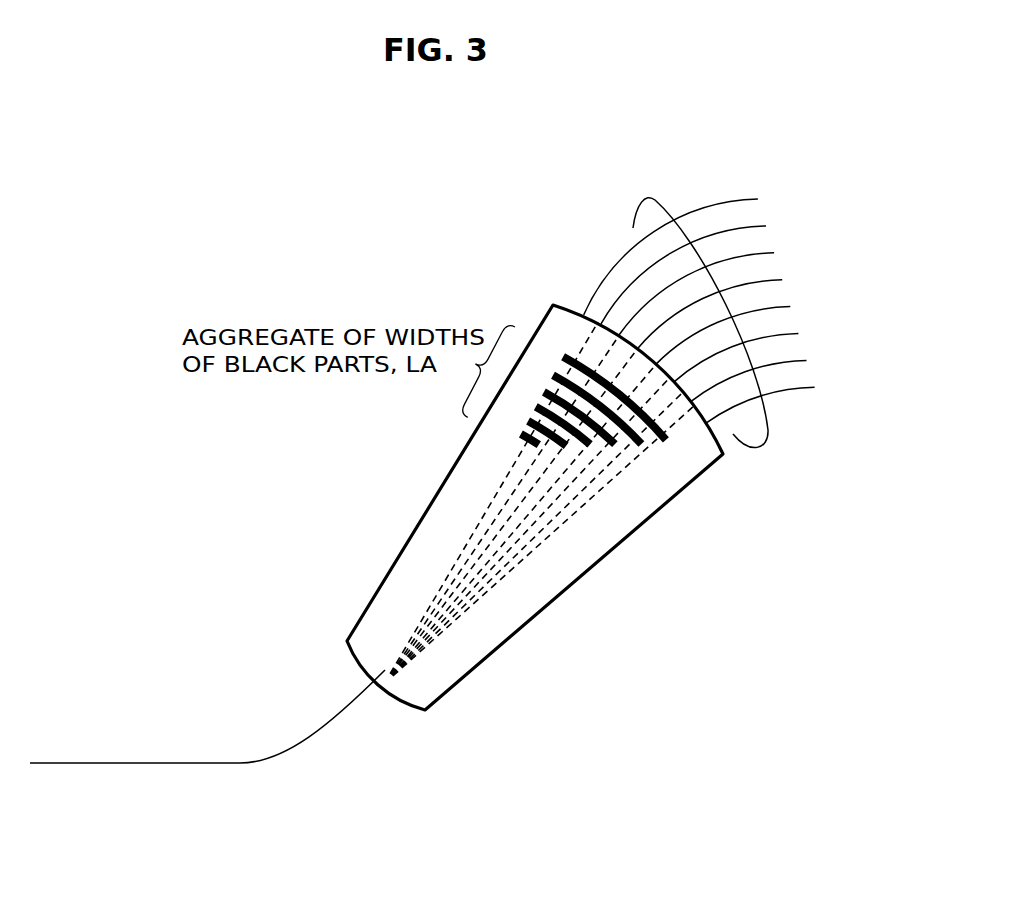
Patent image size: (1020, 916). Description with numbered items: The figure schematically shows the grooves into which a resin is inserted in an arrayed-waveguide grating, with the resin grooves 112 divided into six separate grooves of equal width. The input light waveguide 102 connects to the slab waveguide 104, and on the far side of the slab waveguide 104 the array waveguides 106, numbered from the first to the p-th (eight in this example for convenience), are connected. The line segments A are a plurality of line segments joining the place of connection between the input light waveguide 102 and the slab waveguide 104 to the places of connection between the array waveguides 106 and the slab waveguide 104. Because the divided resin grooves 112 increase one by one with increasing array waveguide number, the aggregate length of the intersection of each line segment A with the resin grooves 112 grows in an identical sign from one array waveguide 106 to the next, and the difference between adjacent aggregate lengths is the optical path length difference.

The input light waveguide 102 is at (156, 766).
The slab waveguide 104 is at (552, 604).
The array waveguides 106 is at (644, 196).
The resin grooves 112 is at (567, 352).
The line segments A is at (473, 545).